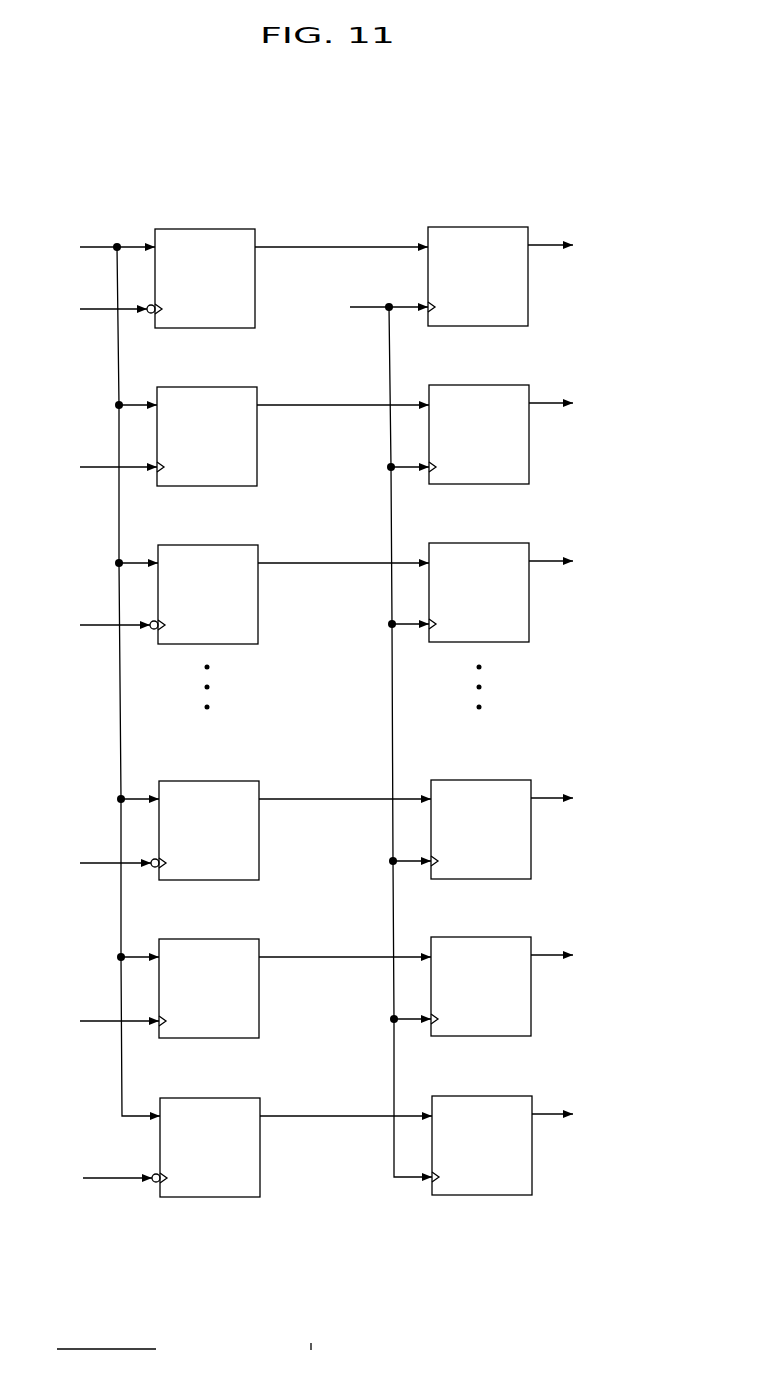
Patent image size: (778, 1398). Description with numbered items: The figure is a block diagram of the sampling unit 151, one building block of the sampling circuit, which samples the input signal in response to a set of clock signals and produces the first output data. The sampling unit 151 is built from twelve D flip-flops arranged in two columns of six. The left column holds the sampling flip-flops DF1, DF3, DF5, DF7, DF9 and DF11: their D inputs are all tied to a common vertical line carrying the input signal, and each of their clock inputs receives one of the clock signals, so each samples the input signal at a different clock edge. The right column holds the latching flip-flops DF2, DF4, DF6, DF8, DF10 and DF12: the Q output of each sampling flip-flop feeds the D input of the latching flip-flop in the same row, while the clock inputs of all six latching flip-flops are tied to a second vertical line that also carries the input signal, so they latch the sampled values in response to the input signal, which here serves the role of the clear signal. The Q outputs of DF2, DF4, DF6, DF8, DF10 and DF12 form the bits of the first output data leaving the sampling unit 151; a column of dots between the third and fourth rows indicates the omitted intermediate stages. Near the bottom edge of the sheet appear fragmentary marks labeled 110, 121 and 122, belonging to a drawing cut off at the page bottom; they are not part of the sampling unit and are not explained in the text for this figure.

The sampling unit 151 is at (363, 142).
The D flip-flop DF1 is at (208, 229).
The D flip-flop DF2 is at (481, 227).
The D flip-flop DF3 is at (210, 387).
The D flip-flop DF4 is at (482, 385).
The D flip-flop DF5 is at (211, 545).
The D flip-flop DF6 is at (482, 543).
The D flip-flop DF7 is at (212, 781).
The D flip-flop DF8 is at (484, 780).
The D flip-flop DF9 is at (212, 939).
The D flip-flop DF10 is at (484, 937).
The D flip-flop DF11 is at (213, 1098).
The D flip-flop DF12 is at (485, 1096).
The memory controller 110 is at (130, 1349).
The memory device 121 is at (310, 1334).
The memory device 122 is at (421, 1331).